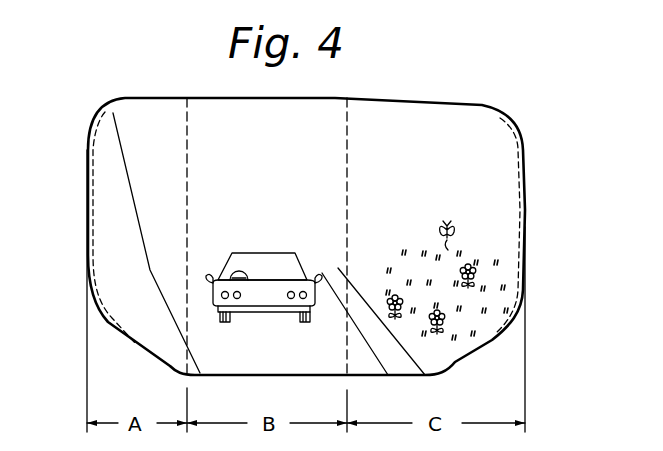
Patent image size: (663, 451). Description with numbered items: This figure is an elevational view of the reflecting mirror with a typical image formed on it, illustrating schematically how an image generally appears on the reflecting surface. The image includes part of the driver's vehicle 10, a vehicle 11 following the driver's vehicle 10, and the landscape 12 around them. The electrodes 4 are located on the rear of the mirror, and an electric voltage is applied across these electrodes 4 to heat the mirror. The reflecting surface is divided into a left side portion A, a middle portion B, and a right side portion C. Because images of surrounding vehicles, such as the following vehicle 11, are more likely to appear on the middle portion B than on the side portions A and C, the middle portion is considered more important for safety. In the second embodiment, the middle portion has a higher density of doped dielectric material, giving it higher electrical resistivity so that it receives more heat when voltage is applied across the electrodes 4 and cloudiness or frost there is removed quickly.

The electrodes 4 is at (85, 200).
The driver's vehicle 10 is at (108, 152).
The following vehicle 11 is at (268, 250).
The landscape 12 is at (502, 251).